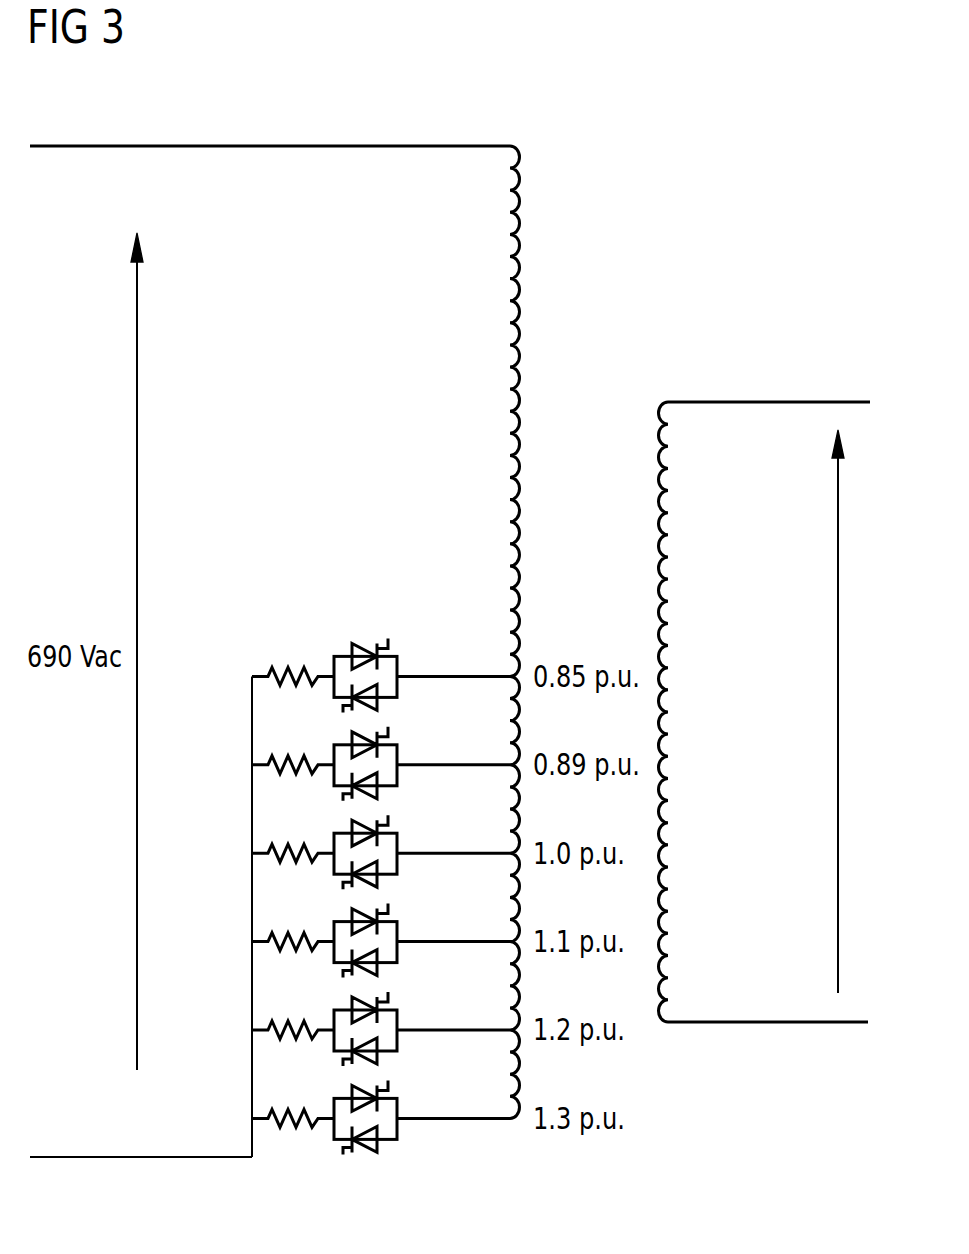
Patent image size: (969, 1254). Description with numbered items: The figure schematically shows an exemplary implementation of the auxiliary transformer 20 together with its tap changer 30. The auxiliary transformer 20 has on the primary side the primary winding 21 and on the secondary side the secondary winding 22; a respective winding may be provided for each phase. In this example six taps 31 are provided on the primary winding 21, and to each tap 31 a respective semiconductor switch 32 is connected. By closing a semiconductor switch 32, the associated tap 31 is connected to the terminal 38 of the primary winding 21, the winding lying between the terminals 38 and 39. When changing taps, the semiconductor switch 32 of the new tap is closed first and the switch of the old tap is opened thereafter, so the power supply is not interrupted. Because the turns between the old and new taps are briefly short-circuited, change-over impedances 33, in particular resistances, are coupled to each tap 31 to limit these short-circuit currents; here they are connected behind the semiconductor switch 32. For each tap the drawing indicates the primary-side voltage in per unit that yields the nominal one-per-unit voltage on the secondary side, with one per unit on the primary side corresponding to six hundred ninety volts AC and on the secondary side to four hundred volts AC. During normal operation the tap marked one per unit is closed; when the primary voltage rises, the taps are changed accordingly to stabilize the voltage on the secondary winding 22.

The auxiliary transformer 20 is at (740, 152).
The primary winding 21 is at (521, 290).
The secondary winding 22 is at (658, 437).
The tap changer 30 is at (515, 1187).
The tap 31 is at (453, 864).
The semiconductor switch 32 is at (360, 620).
The change-over impedance 33 is at (290, 640).
The terminal 38 is at (78, 1157).
The terminal 39 is at (80, 146).